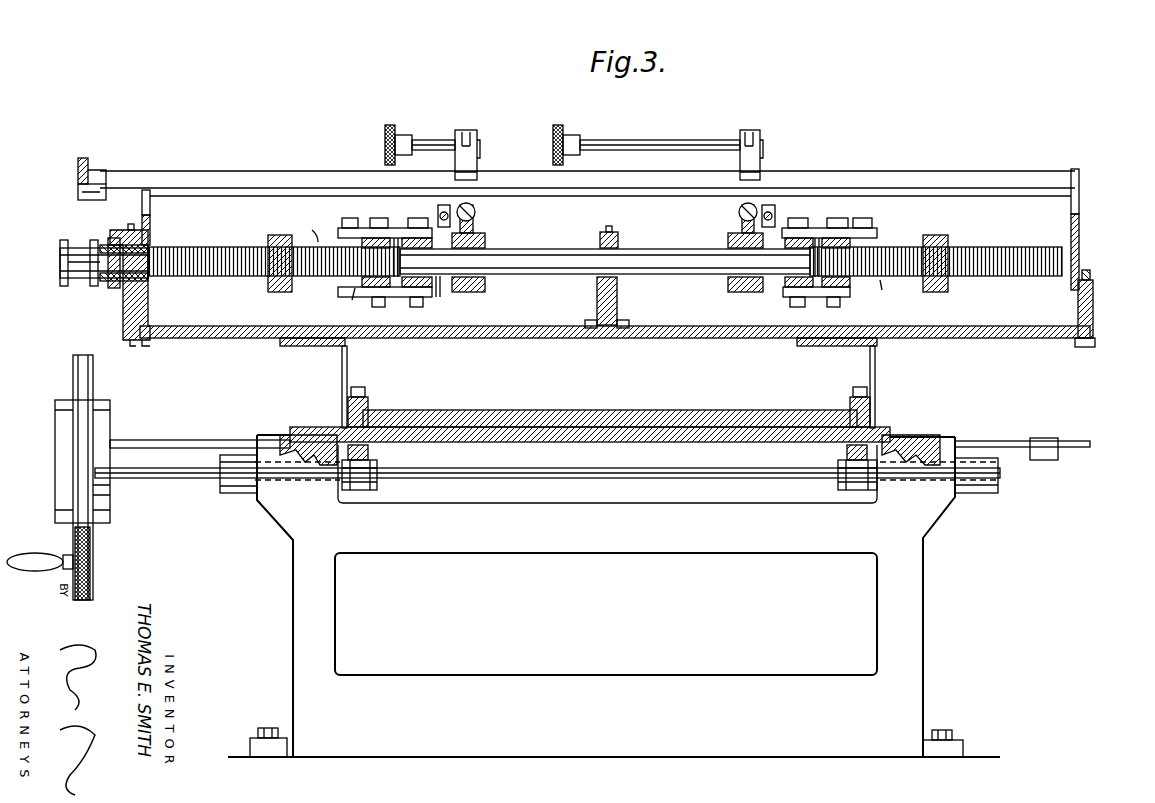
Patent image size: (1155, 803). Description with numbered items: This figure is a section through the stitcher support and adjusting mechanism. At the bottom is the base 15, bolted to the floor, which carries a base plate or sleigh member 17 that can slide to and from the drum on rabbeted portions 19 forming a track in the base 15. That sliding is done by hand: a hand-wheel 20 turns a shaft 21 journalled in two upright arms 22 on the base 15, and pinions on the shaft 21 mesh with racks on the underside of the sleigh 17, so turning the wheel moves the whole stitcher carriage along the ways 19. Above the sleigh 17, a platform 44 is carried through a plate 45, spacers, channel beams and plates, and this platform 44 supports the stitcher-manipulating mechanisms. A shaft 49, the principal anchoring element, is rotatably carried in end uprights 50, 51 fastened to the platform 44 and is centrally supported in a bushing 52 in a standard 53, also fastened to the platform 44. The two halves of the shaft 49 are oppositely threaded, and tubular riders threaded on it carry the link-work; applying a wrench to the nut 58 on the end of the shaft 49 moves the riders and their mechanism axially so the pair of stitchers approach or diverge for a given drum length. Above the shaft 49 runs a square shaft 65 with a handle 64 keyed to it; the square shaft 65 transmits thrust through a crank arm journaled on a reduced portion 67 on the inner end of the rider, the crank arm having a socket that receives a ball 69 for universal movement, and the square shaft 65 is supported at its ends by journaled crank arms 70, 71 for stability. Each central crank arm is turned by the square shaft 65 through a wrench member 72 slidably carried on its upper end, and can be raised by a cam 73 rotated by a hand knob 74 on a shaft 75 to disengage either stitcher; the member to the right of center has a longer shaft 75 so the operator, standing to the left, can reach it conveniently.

The base 15 is at (923, 612).
The sleigh member 17 is at (373, 428).
The rabbeted portions 19 is at (318, 470).
The hand-wheel 20 is at (83, 383).
The shaft 21 is at (180, 468).
The upright arms 22 is at (270, 505).
The platform 44 is at (669, 338).
The plate 45 is at (680, 412).
The shaft 49 is at (660, 252).
The end upright 50 is at (140, 308).
The end upright 51 is at (1093, 302).
The bushing 52 is at (618, 245).
The standard 53 is at (617, 300).
The nut 58 is at (62, 283).
The handle 64 is at (82, 158).
The square shaft 65 is at (853, 160).
The reduced portion 67 is at (468, 292).
The ball 69 is at (441, 284).
The crank arm 70 is at (150, 208).
The crank arm 71 is at (1079, 192).
The wrench member 72 is at (477, 158).
The cam 73 is at (465, 130).
The hand knob 74 is at (395, 128).
The shaft 75 is at (425, 140).